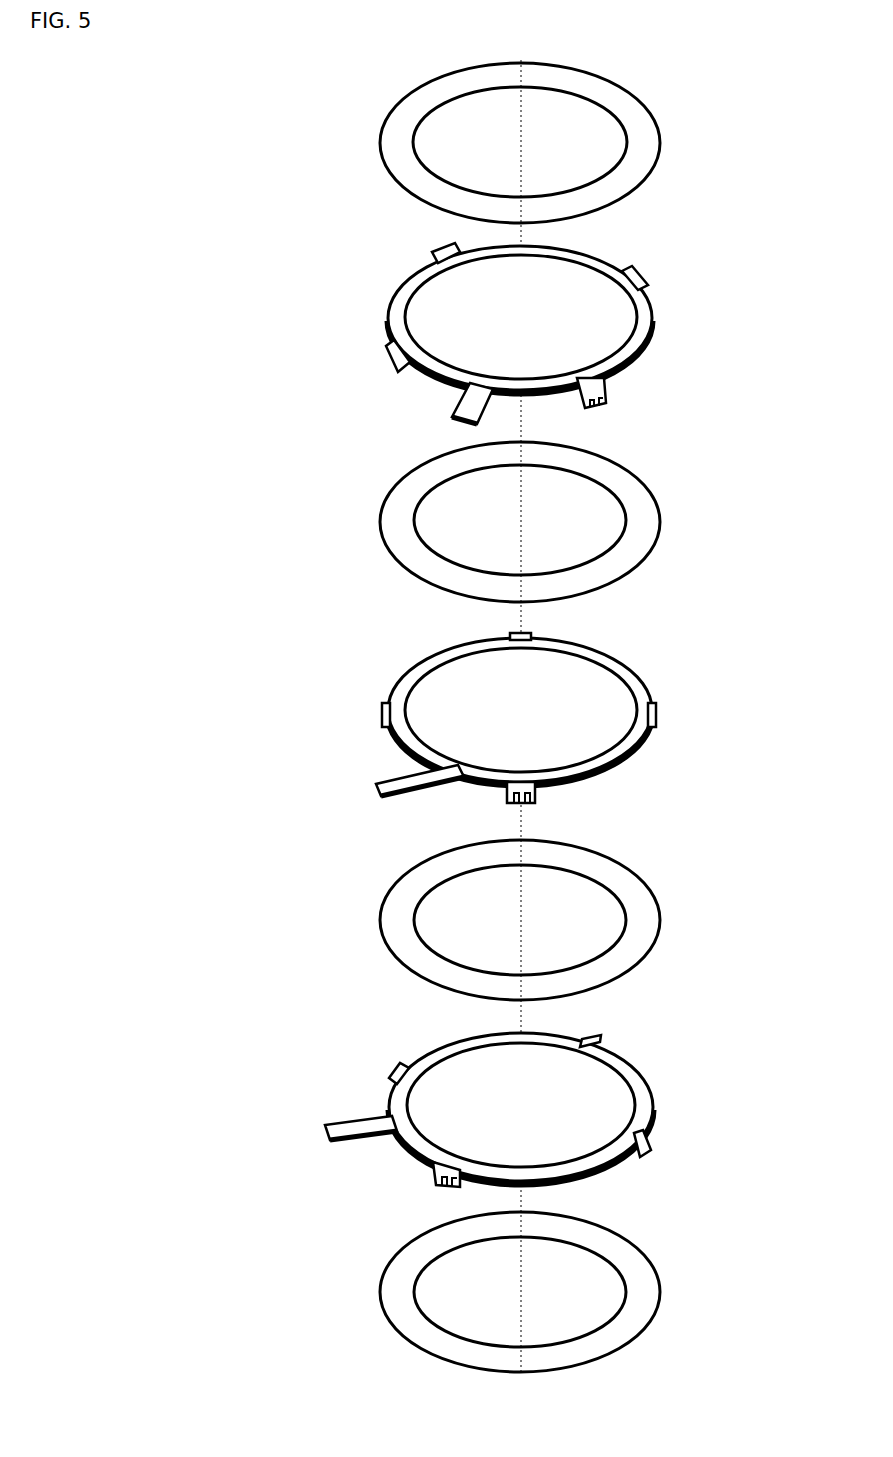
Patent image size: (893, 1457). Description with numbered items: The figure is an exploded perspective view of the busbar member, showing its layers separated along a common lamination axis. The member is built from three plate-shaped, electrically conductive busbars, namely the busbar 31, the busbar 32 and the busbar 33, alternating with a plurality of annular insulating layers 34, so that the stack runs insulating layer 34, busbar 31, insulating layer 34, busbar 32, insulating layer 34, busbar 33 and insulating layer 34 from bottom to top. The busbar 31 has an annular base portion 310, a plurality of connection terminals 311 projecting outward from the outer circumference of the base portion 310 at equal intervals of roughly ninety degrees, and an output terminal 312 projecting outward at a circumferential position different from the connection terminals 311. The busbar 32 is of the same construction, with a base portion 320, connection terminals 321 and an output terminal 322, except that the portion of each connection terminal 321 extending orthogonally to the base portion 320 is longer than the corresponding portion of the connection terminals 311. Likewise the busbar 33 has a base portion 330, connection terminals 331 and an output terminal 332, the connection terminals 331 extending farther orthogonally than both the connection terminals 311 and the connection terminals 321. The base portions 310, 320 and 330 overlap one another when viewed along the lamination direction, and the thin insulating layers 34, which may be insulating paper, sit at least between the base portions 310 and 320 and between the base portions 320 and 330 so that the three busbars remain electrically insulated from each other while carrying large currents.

The busbar 31 is at (525, 1108).
The base portion 310 is at (640, 1093).
The connection terminals 311 is at (398, 1070).
The output terminal 312 is at (338, 1126).
The busbar 32 is at (541, 715).
The base portion 320 is at (625, 745).
The connection terminals 321 is at (533, 638).
The output terminal 322 is at (392, 783).
The busbar 33 is at (551, 326).
The base portion 330 is at (640, 323).
The connection terminals 331 is at (433, 258).
The output terminal 332 is at (456, 410).
The insulating layer 34 is at (655, 140).